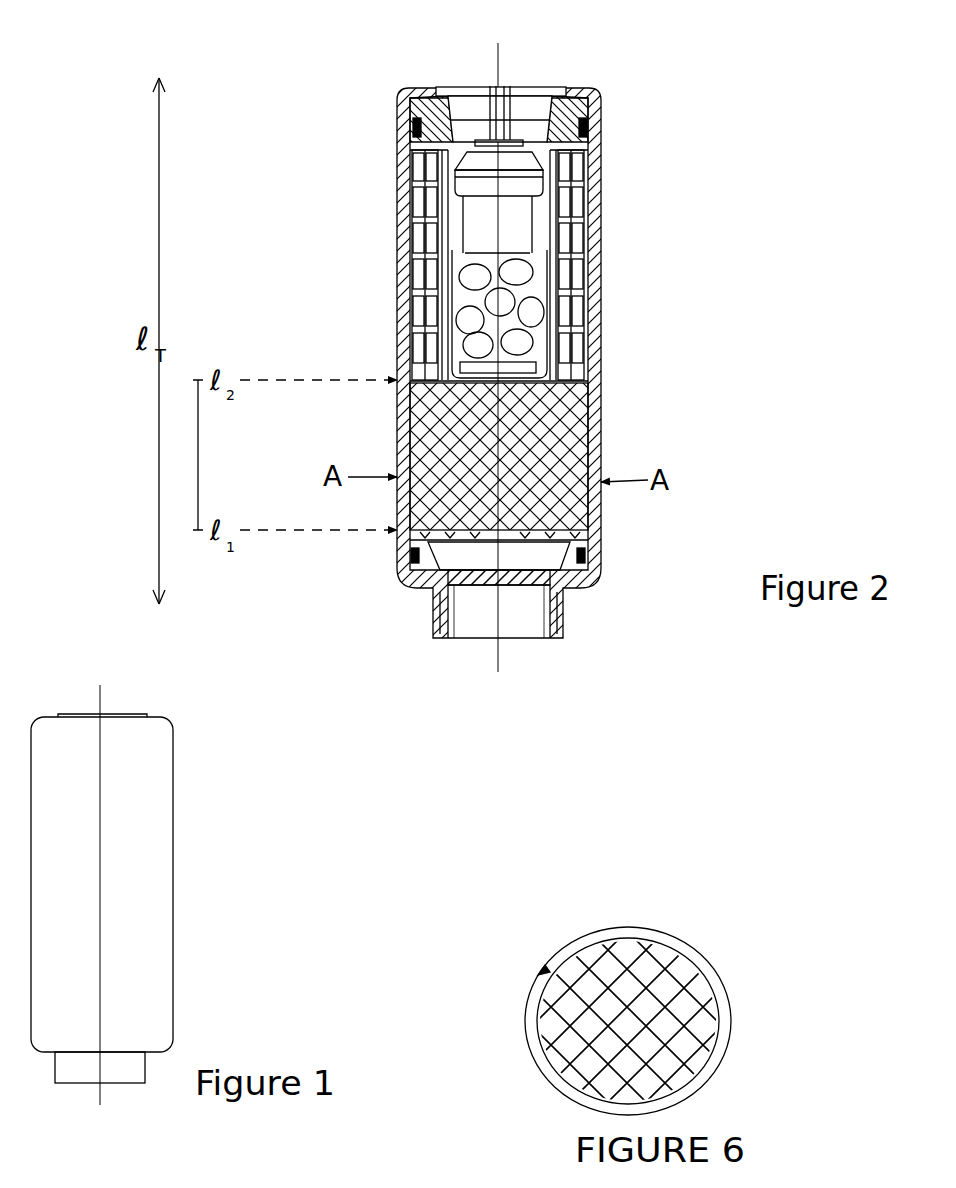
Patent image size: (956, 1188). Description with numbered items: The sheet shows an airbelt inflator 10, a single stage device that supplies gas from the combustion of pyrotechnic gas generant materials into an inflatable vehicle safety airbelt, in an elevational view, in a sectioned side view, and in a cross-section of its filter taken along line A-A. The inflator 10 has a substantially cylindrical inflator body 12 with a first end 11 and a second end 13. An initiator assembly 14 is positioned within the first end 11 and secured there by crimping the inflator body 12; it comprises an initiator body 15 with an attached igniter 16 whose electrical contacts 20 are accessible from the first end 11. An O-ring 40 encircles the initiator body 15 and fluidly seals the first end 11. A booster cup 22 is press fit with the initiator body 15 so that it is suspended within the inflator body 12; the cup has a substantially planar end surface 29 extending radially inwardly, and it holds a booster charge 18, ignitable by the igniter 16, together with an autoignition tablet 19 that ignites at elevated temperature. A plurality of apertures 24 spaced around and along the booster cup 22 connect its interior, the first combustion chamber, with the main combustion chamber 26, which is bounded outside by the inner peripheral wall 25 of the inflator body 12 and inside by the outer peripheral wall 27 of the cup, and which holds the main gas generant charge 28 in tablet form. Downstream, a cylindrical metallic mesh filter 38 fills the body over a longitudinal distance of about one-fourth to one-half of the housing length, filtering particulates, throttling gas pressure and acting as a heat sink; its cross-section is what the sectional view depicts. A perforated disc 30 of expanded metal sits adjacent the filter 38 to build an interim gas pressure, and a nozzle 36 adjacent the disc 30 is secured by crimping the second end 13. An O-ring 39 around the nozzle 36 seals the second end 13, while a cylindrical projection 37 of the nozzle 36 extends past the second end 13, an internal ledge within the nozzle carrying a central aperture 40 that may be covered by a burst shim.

In FIG. 1, the airbelt inflator 10 is at (200, 825).
In FIG. 2, the first end 11 is at (565, 92).
In FIG. 2, the inflator body 12 is at (600, 132).
In FIG. 6, the inflator body 12 is at (597, 940).
In FIG. 2, the second end 13 is at (478, 645).
In FIG. 2, the initiator assembly 14 is at (440, 142).
In FIG. 2, the initiator body 15 is at (398, 107).
In FIG. 2, the igniter 16 is at (545, 200).
In FIG. 2, the booster charge 18 is at (525, 320).
In FIG. 2, the autoignition tablet 19 is at (400, 372).
In FIG. 2, the electrical contacts 20 is at (503, 88).
In FIG. 2, the booster cup 22 is at (436, 284).
In FIG. 2, the apertures 24 is at (430, 250).
In FIG. 2, the inner peripheral wall 25 is at (578, 160).
In FIG. 2, the main combustion chamber 26 is at (424, 210).
In FIG. 2, the outer peripheral wall 27 is at (563, 294).
In FIG. 2, the main gas generant charge 28 is at (590, 266).
In FIG. 2, the end surface 29 is at (527, 390).
In FIG. 2, the perforated disc 30 is at (585, 558).
In FIG. 2, the nozzle 36 is at (565, 606).
In FIG. 2, the cylindrical projection 37 is at (438, 613).
In FIG. 2, the filter 38 is at (555, 395).
In FIG. 6, the filter 38 is at (676, 1010).
In FIG. 2, the O-ring 39 is at (410, 562).
In FIG. 2, the O-ring 40 is at (412, 128).